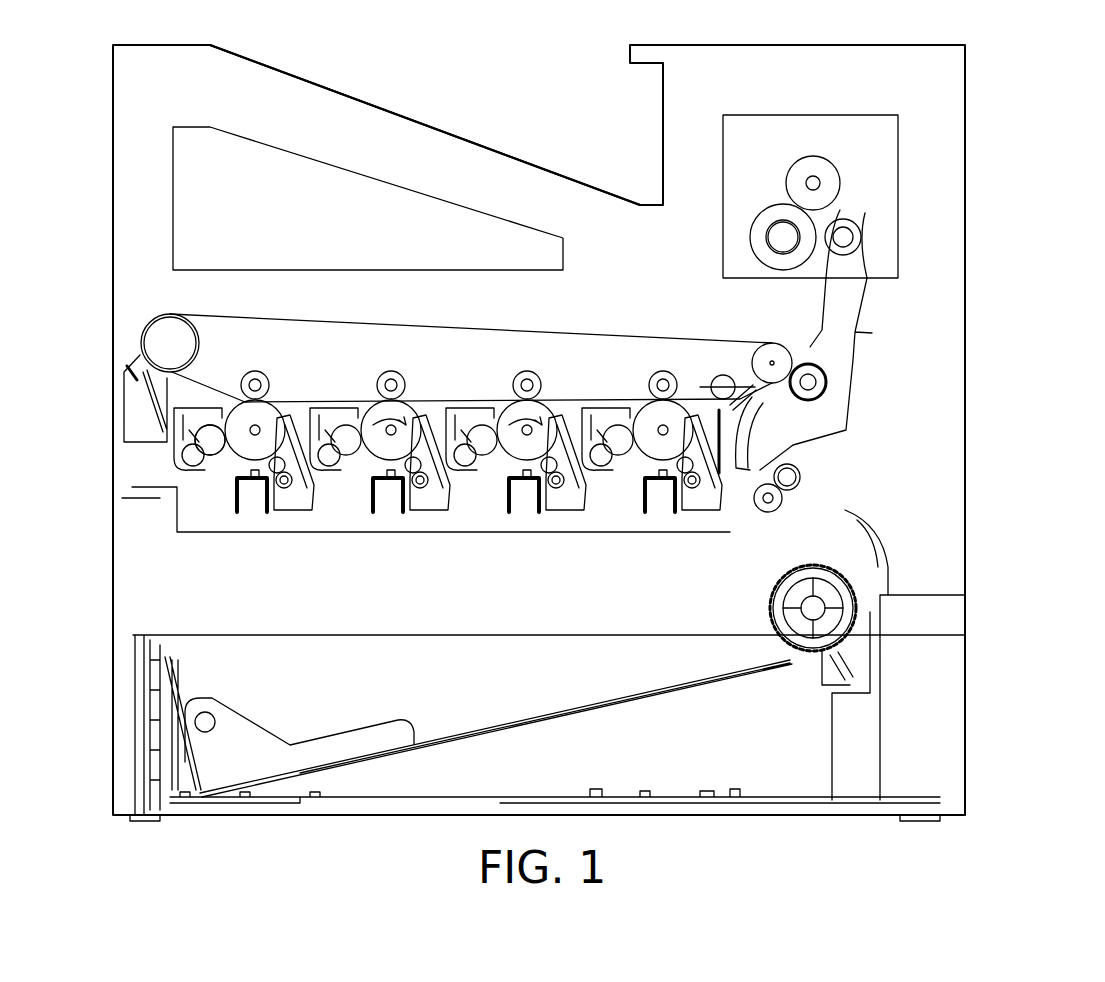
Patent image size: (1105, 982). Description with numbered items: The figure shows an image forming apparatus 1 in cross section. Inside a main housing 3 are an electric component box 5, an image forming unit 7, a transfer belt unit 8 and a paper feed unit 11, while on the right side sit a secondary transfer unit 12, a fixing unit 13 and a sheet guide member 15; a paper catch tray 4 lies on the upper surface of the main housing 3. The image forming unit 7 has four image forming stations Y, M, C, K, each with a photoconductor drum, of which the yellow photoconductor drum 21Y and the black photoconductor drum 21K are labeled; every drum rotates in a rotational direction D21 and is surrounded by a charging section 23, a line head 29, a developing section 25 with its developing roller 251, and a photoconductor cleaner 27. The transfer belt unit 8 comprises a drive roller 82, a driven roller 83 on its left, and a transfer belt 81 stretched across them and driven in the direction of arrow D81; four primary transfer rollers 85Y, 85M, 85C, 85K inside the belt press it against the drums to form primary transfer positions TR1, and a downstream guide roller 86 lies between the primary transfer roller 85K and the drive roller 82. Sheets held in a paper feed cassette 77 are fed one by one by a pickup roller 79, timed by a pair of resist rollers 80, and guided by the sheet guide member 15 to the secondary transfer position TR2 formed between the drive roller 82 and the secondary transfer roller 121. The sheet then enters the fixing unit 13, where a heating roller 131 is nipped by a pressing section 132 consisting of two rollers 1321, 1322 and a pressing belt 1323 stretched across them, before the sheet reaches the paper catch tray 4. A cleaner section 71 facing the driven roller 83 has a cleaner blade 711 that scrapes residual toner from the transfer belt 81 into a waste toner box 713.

The image forming apparatus 1 is at (1070, 92).
The main housing 3 is at (965, 495).
The paper catch tray 4 is at (437, 129).
The electric component box 5 is at (292, 153).
The image forming unit 7 is at (223, 515).
The transfer belt unit 8 is at (612, 325).
The paper feed unit 11 is at (648, 630).
The secondary transfer unit 12 is at (785, 403).
The fixing unit 13 is at (768, 115).
The sheet guide member 15 is at (826, 312).
The photoconductor drum 21Y is at (300, 393).
The photoconductor drum 21K is at (687, 407).
The charging section 23 is at (285, 506).
The developing section 25 is at (176, 456).
The photoconductor cleaner 27 is at (433, 412).
The line head 29 is at (237, 512).
The cleaner section 71 is at (112, 435).
The paper feed cassette 77 is at (454, 633).
The pickup roller 79 is at (770, 594).
The resist rollers 80 is at (798, 494).
The transfer belt 81 is at (305, 323).
The drive roller 82 is at (766, 355).
The driven roller 83 is at (178, 335).
The primary transfer roller 85Y is at (249, 372).
The primary transfer roller 85M is at (392, 372).
The primary transfer roller 85C is at (529, 372).
The primary transfer roller 85K is at (663, 372).
The downstream guide roller 86 is at (722, 377).
The secondary transfer roller 121 is at (826, 378).
The heating roller 131 is at (750, 237).
The pressing section 132 is at (866, 215).
The roller 1321 is at (860, 255).
The roller 1322 is at (813, 165).
The pressing belt 1323 is at (840, 210).
The developing roller 251 is at (210, 448).
The cleaner blade 711 is at (128, 370).
The waste toner box 713 is at (124, 408).
The primary transfer position TR1 is at (235, 390).
The secondary transfer position TR2 is at (802, 360).
The rotational direction D21 is at (456, 435).
The feeding direction arrow D81 is at (495, 316).
The image forming station Y is at (270, 518).
The image forming station M is at (417, 523).
The image forming station C is at (553, 523).
The image forming station K is at (689, 523).